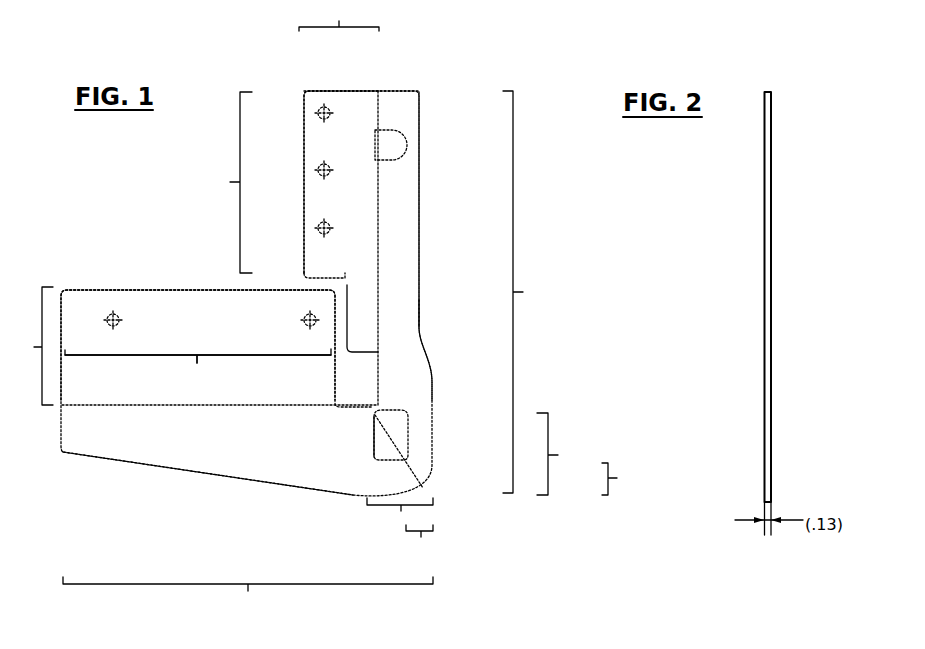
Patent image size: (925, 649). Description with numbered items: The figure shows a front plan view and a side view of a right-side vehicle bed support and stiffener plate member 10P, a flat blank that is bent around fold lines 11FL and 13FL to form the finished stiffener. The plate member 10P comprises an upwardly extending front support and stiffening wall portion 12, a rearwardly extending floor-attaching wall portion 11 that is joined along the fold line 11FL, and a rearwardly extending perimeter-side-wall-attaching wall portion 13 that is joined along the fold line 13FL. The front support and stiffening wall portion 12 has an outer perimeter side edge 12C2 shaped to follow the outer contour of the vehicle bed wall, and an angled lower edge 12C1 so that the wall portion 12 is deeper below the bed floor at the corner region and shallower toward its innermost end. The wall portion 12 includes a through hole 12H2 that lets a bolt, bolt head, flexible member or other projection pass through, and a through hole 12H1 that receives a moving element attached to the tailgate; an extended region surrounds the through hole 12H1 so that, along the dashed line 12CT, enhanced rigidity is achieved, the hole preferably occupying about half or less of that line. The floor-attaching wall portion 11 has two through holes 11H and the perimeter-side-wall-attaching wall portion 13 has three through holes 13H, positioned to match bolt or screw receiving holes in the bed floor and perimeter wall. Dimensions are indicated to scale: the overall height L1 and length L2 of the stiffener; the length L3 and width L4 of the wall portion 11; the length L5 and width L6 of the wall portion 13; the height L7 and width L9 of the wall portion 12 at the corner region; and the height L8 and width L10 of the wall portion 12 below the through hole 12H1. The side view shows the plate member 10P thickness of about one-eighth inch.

In FIG. 1, the plate member 10P is at (186, 210).
In FIG. 2, the plate member 10P is at (746, 220).
In FIG. 1, the rearwardly extending floor-attaching wall portion 11 is at (82, 313).
In FIG. 1, the through holes 11H is at (303, 312).
In FIG. 1, the fold line 11FL is at (138, 407).
In FIG. 1, the front support and stiffening wall portion 12 is at (213, 452).
In FIG. 1, the lower edge 12C1 is at (260, 479).
In FIG. 1, the outer perimeter side edge 12C2 is at (418, 333).
In FIG. 1, the dashed line 12CT is at (415, 472).
In FIG. 1, the through hole 12H1 is at (375, 453).
In FIG. 1, the through hole 12H2 is at (388, 147).
In FIG. 1, the rearwardly extending perimeter-side-wall-attaching wall portion 13 is at (310, 198).
In FIG. 1, the through holes 13H is at (322, 162).
In FIG. 1, the fold line 13FL is at (377, 103).
In FIG. 1, the height L1 is at (532, 292).
In FIG. 1, the length L2 is at (248, 608).
In FIG. 1, the length L3 is at (198, 377).
In FIG. 1, the length L4 is at (29, 346).
In FIG. 1, the length L5 is at (226, 182).
In FIG. 1, the length L6 is at (339, 16).
In FIG. 1, the length L7 is at (565, 454).
In FIG. 1, the length L8 is at (634, 479).
In FIG. 1, the length L9 is at (400, 532).
In FIG. 1, the length L10 is at (438, 545).